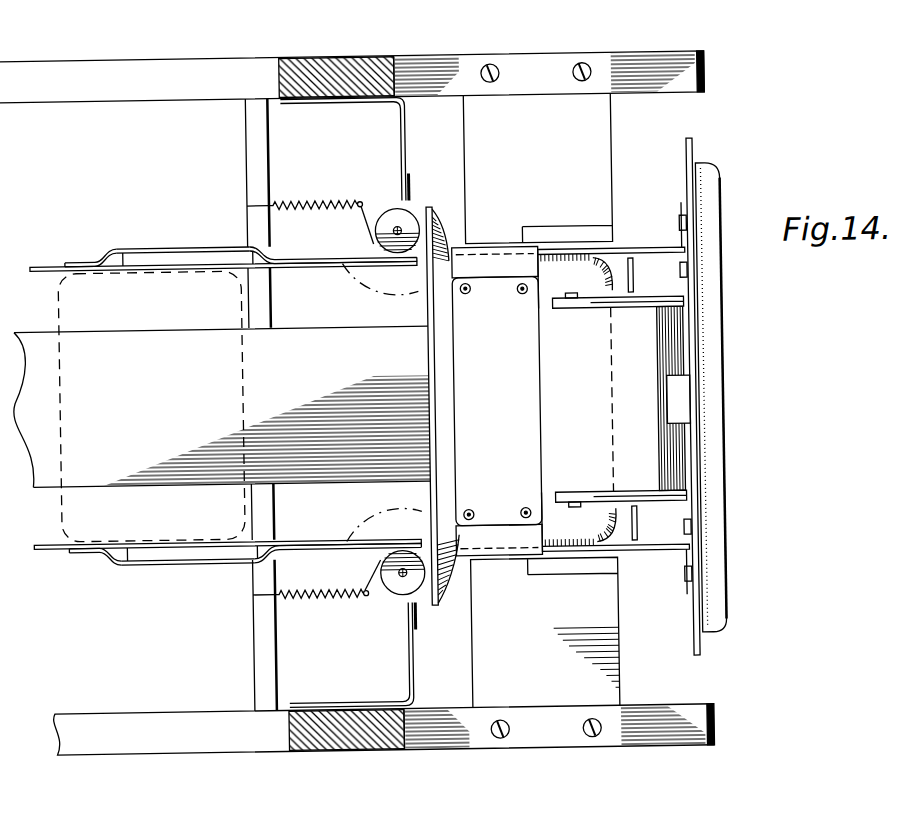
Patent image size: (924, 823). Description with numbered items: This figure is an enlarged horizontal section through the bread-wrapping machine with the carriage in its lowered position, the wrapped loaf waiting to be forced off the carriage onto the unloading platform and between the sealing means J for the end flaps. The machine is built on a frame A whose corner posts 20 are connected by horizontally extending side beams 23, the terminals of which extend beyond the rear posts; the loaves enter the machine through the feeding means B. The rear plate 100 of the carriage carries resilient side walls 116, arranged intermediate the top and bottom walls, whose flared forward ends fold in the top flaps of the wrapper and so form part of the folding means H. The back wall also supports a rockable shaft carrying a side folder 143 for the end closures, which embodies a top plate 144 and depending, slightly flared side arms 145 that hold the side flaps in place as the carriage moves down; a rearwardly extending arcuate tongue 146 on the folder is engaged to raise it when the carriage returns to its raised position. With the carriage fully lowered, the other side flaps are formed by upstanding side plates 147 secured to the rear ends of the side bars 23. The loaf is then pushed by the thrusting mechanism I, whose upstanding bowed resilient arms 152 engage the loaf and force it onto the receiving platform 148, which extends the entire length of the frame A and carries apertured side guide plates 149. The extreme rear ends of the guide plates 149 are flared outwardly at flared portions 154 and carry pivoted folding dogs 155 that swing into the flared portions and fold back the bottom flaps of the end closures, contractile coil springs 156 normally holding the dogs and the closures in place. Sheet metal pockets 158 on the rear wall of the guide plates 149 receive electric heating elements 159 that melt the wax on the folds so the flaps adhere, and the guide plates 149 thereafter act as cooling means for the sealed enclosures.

The frame A is at (336, 74).
The corner posts 20 is at (323, 714).
The side beams 23 is at (151, 729).
The rear plate 100 is at (702, 442).
The resilient side walls 116 is at (650, 491).
The side folder 143 is at (222, 407).
The top plate 144 is at (629, 354).
The side arms 145 is at (498, 256).
The arcuate tongue 146 is at (682, 367).
The side plates 147 is at (583, 187).
The receiving platform 148 is at (615, 421).
The side guide plates 149 is at (45, 264).
The bowed resilient arms 152 is at (636, 526).
The flared portions 154 is at (342, 249).
The folding dogs 155 is at (409, 219).
The contractile coil springs 156 is at (322, 204).
The sheet metal pockets 158 is at (200, 246).
The electric heating elements 159 is at (143, 258).
The means for feeding the loaves B is at (690, 303).
The folding means H is at (688, 557).
The means for thrusting the bread I is at (634, 279).
The sealing means J is at (228, 570).